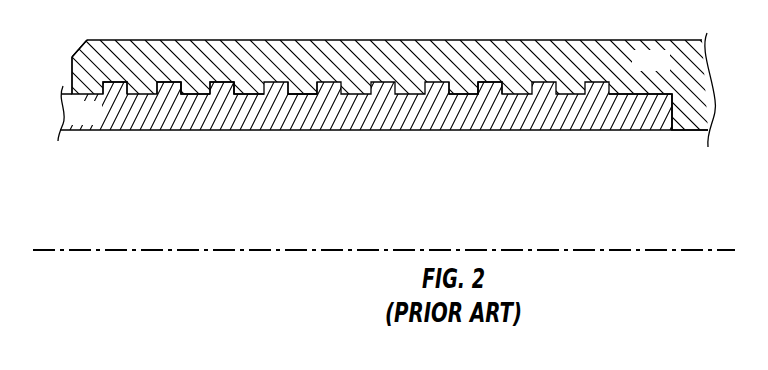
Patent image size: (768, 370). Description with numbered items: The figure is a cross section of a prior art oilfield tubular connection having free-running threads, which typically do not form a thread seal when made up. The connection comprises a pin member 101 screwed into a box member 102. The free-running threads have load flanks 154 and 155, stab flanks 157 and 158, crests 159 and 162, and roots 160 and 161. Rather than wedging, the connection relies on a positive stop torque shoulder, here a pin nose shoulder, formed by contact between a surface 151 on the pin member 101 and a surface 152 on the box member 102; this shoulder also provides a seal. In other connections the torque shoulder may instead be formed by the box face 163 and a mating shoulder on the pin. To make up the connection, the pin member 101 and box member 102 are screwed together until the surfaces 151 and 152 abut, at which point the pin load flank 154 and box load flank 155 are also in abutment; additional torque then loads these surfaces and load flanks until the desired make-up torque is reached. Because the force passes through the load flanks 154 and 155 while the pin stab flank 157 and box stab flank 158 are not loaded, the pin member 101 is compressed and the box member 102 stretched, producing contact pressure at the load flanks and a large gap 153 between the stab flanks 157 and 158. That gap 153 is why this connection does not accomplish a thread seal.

The pin member 101 is at (101, 123).
The box member 102 is at (669, 70).
The surface 151 is at (672, 112).
The surface 152 is at (672, 112).
The gap 153 is at (128, 82).
The pin load flank 154 is at (475, 94).
The box load flank 155 is at (482, 88).
The pin stab flank 157 is at (181, 82).
The box stab flank 158 is at (181, 95).
The crest 159 is at (222, 82).
The root 160 is at (234, 94).
The root 161 is at (309, 94).
The crest 162 is at (309, 95).
The box face 163 is at (72, 72).